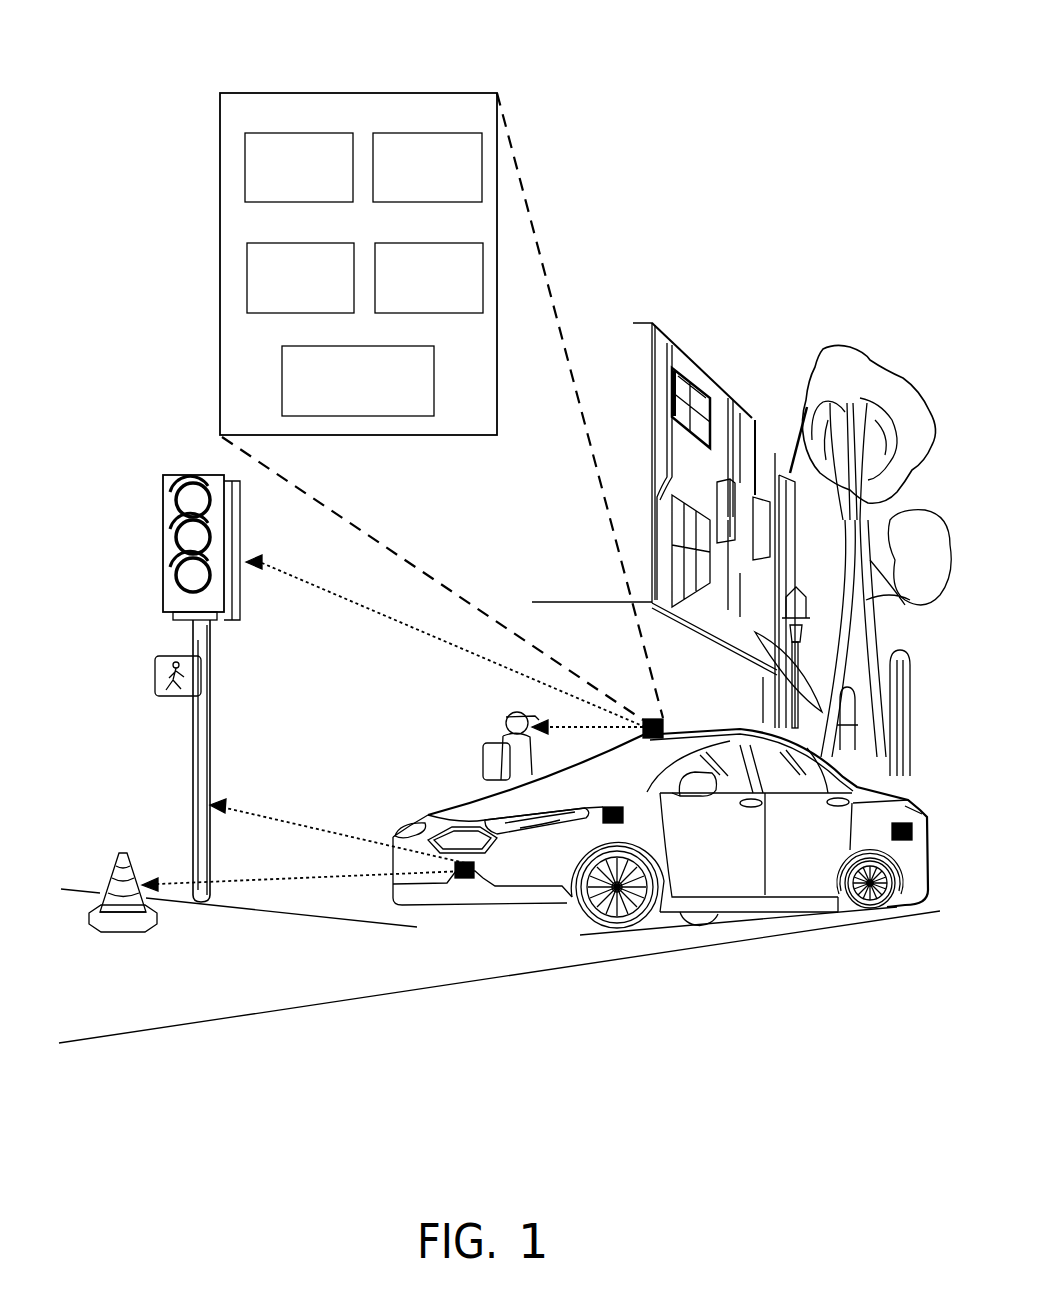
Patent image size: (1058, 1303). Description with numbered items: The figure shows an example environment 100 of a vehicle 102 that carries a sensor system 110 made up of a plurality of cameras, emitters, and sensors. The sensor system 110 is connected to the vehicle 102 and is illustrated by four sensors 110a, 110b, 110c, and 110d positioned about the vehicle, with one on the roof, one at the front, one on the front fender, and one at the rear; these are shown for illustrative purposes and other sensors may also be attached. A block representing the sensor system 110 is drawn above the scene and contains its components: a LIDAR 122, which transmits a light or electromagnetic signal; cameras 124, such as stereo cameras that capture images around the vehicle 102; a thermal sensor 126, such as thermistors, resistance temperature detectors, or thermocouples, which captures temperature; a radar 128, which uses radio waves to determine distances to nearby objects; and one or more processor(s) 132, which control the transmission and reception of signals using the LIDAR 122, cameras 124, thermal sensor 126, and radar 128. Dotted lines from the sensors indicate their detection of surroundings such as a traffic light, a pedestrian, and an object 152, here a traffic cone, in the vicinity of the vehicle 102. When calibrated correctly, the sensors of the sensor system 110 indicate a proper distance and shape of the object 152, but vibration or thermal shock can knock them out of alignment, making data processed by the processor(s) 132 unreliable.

The environment 100 is at (852, 28).
The vehicle 102 is at (428, 815).
The sensor system 110 is at (447, 93).
The sensor 110a is at (663, 727).
The sensor 110b is at (613, 807).
The sensor 110c is at (485, 877).
The sensor 110d is at (920, 816).
The LIDAR 122 is at (432, 133).
The cameras 124 is at (280, 133).
The thermal sensor 126 is at (297, 243).
The radar 128 is at (434, 243).
The processor(s) 132 is at (372, 346).
The object 152 is at (128, 933).